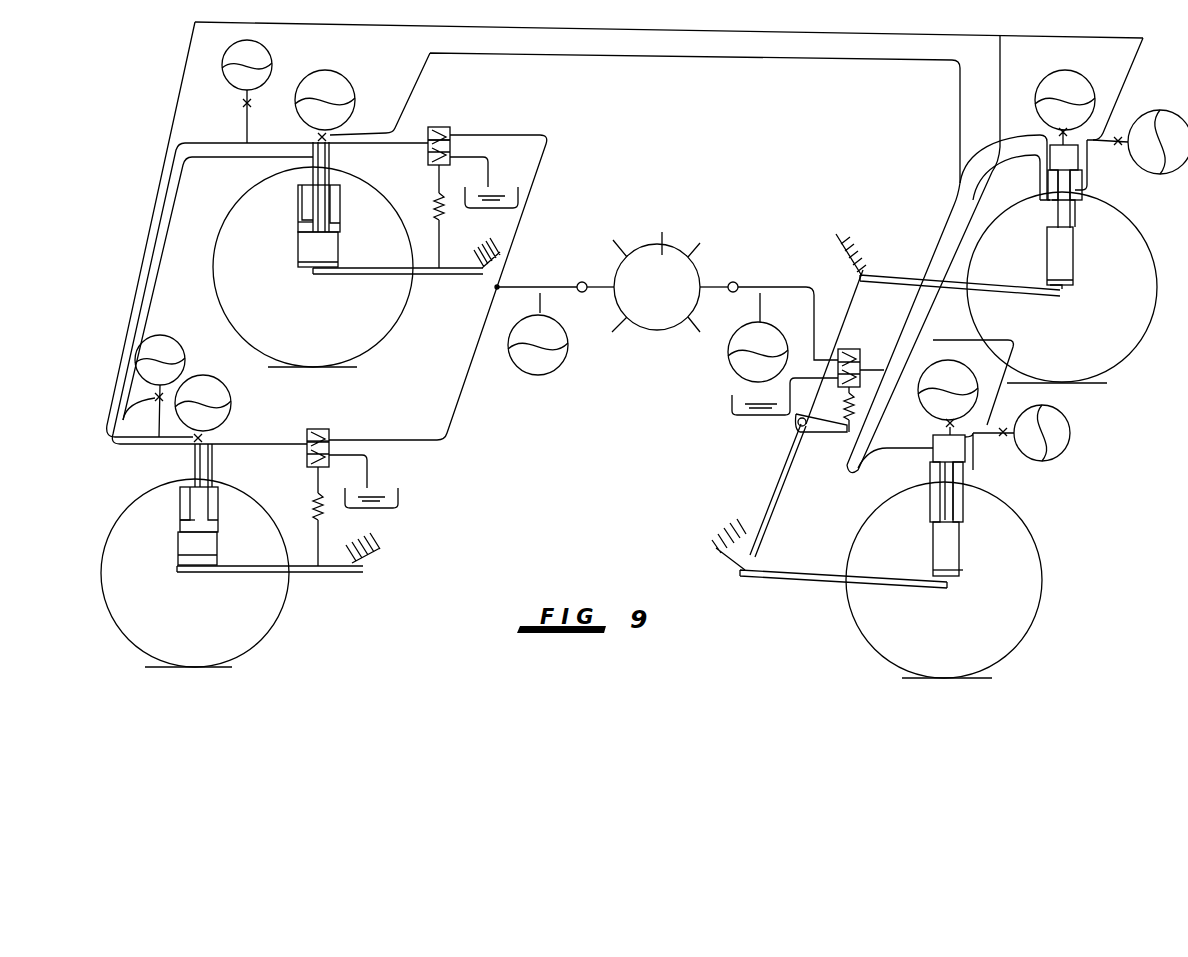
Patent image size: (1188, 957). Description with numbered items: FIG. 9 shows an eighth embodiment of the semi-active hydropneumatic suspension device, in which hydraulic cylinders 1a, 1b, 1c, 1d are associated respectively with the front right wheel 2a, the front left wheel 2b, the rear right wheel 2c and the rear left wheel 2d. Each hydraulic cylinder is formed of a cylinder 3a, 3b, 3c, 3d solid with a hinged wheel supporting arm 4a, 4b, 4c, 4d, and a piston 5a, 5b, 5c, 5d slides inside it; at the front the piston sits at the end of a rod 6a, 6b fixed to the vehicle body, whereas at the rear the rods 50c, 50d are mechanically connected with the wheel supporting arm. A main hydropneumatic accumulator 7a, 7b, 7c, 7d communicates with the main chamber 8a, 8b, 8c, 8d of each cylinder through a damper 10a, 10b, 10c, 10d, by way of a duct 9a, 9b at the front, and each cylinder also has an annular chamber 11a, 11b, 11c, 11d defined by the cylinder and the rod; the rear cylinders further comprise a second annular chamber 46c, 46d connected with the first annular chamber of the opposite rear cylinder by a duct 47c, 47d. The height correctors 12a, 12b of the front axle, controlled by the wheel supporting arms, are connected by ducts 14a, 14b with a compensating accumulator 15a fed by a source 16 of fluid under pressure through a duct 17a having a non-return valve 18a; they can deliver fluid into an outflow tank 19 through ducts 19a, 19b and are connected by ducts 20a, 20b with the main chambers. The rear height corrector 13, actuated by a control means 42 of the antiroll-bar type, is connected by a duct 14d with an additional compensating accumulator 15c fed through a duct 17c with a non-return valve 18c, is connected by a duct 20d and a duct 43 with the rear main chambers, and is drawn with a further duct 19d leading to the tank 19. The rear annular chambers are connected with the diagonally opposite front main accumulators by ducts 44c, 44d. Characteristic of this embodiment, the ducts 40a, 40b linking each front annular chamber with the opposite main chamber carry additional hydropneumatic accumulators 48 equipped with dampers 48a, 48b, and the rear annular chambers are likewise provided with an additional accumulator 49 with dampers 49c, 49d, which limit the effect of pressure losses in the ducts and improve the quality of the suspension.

The hydraulic cylinder 1a is at (357, 116).
The hydraulic cylinder 1b is at (223, 418).
The hydraulic cylinder 1c is at (1122, 118).
The hydraulic cylinder 1d is at (976, 424).
The front right wheel 2a is at (394, 350).
The front left wheel 2b is at (270, 631).
The rear right wheel 2c is at (1120, 352).
The rear left wheel 2d is at (1036, 598).
The cylinder 3a is at (341, 222).
The cylinder 3b is at (218, 532).
The cylinder 3c is at (1080, 222).
The cylinder 3d is at (962, 516).
The wheel supporting arm 4a is at (436, 278).
The wheel supporting arm 4b is at (336, 578).
The wheel supporting arm 4c is at (884, 274).
The wheel supporting arm 4d is at (798, 590).
The piston 5a is at (300, 250).
The piston 5b is at (178, 546).
The piston 5c is at (1082, 174).
The piston 5d is at (965, 472).
The rod 6a is at (336, 200).
The rod 6b is at (213, 468).
The main hydropneumatic accumulator 7a is at (345, 80).
The main hydropneumatic accumulator 7b is at (205, 375).
The main hydropneumatic accumulator 7c is at (1044, 80).
The main hydropneumatic accumulator 7d is at (930, 376).
The main chamber 8a is at (300, 286).
The main chamber 8b is at (180, 576).
The main chamber 8c is at (1040, 140).
The main chamber 8d is at (925, 456).
The duct 9a is at (306, 198).
The duct 9b is at (180, 494).
The damper 10a is at (316, 136).
The damper 10b is at (206, 441).
The damper 10c is at (1070, 126).
The damper 10d is at (944, 424).
The annular chamber 11a is at (302, 219).
The annular chamber 11b is at (215, 505).
The annular chamber 11c is at (1082, 192).
The annular chamber 11d is at (965, 492).
The height corrector 12a is at (451, 136).
The height corrector 12b is at (329, 432).
The height corrector 13 is at (856, 346).
The duct 14a is at (548, 202).
The duct 14b is at (462, 415).
The duct 14d is at (812, 292).
The hydropneumatic compensating accumulator 15a is at (542, 375).
The additional hydropneumatic compensating accumulator 15c is at (730, 374).
The source of fluid under pressure 16 is at (662, 232).
The duct 17a is at (582, 283).
The duct 17c is at (733, 283).
The non-return valve 18a is at (585, 294).
The non-return valve 18c is at (730, 294).
The outflow tank 19 is at (478, 210).
The duct 19a is at (488, 190).
The duct 19b is at (368, 472).
The reservoir 19d is at (738, 401).
The duct 20a is at (430, 124).
The duct 20b is at (313, 426).
The duct 20d is at (840, 347).
The duct 40a is at (160, 262).
The duct 40b is at (150, 230).
The control means 42 is at (762, 510).
The duct 43 is at (846, 470).
The duct 44c is at (778, 35).
The duct 44d is at (722, 60).
The second annular chamber 46c is at (1046, 246).
The second annular chamber 46d is at (932, 532).
The duct 47c is at (1014, 342).
The duct 47d is at (946, 300).
The additional hydropneumatic accumulator 48 is at (262, 58).
The damper 48a is at (243, 103).
The damper 48b is at (156, 402).
The pressure gauge 49 is at (1060, 450).
The pressure gauge 49c is at (1135, 126).
The damper 49d is at (1020, 402).
The rod 50c is at (1073, 281).
The rod 50d is at (958, 580).